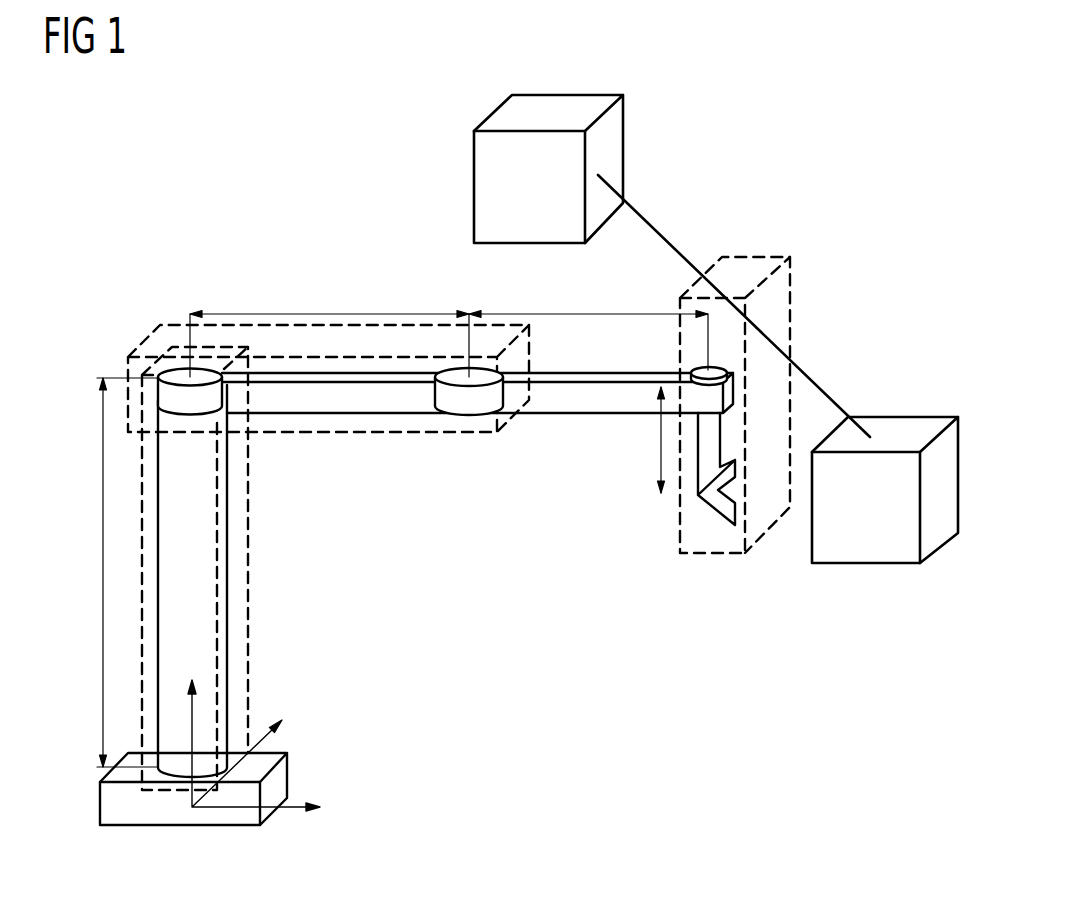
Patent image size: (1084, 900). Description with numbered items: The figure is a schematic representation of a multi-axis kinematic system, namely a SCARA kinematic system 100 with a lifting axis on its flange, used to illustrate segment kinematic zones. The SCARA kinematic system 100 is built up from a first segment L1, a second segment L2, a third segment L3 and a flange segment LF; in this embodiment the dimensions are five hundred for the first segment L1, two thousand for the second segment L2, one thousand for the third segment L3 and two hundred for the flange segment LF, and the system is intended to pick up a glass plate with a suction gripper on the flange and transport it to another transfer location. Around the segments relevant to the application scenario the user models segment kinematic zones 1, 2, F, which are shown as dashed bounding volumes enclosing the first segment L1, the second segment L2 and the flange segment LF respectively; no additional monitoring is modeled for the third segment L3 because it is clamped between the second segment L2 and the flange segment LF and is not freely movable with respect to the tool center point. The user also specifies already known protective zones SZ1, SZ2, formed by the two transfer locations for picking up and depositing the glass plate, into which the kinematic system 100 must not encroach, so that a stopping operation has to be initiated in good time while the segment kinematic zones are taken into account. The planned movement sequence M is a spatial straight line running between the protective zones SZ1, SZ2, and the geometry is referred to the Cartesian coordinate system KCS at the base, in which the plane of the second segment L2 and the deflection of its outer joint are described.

The segment kinematic zone 1 is at (238, 597).
The segment kinematic zone 2 is at (385, 432).
The SCARA kinematic system 100 is at (280, 777).
The Cartesian coordinate system KCS is at (237, 812).
The first segment L1 is at (103, 545).
The second segment L2 is at (330, 310).
The third segment L3 is at (587, 310).
The flange segment LF is at (660, 440).
The segment kinematic zone F is at (740, 260).
The movement sequence M is at (808, 372).
The protective zone SZ1 is at (473, 185).
The protective zone SZ2 is at (868, 567).